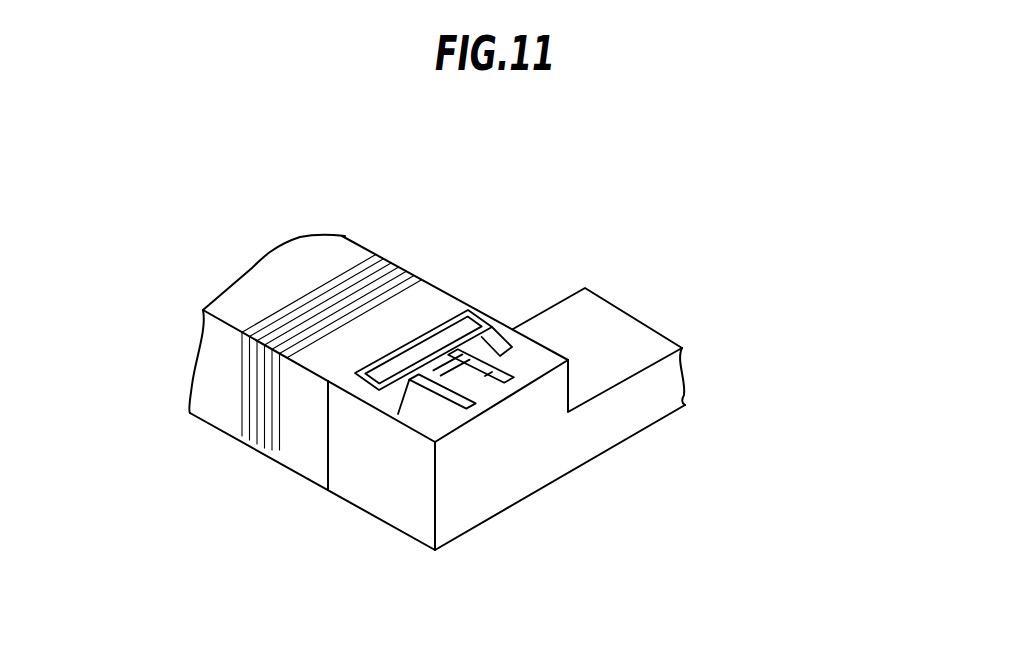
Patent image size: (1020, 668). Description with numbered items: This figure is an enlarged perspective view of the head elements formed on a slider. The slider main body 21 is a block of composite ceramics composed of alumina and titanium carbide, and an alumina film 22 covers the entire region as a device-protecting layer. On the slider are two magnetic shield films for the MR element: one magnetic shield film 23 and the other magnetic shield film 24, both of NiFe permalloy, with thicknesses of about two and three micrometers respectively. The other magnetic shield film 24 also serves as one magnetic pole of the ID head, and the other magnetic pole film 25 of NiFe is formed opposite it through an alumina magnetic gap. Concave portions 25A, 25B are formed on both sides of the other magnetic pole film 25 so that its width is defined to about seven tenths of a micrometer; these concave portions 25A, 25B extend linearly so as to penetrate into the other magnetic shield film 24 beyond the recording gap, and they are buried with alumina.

The slider main body 21 is at (272, 288).
The alumina film 22 is at (327, 443).
The one magnetic shield film 23 is at (399, 356).
The other magnetic shield film 24 is at (477, 336).
The other magnetic pole film 25 is at (472, 383).
The concave portion 25A is at (398, 414).
The concave portion 25B is at (492, 372).